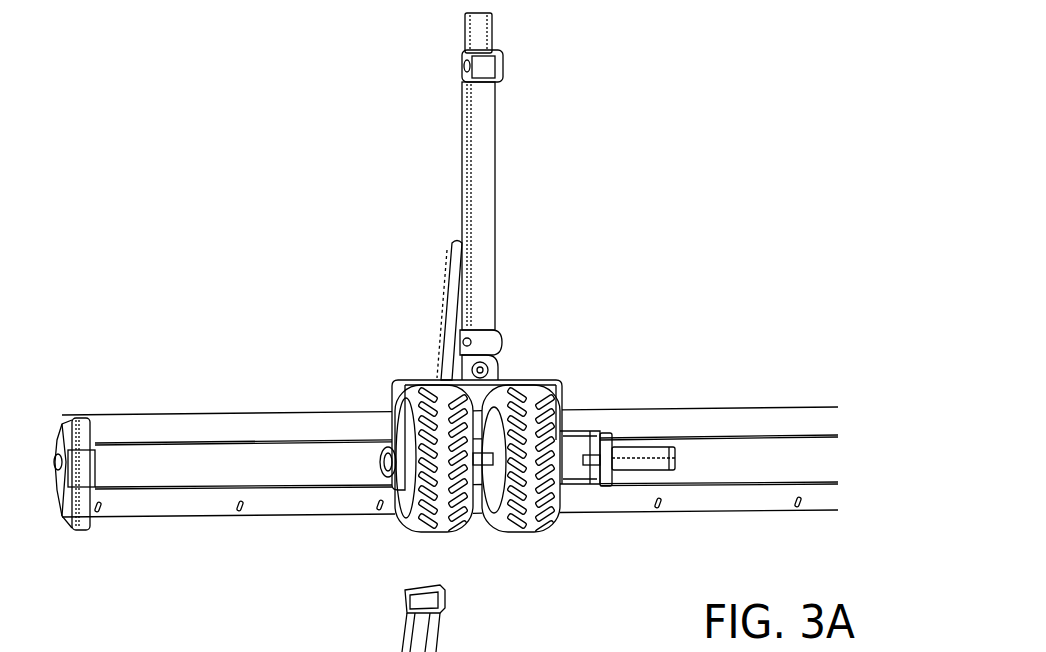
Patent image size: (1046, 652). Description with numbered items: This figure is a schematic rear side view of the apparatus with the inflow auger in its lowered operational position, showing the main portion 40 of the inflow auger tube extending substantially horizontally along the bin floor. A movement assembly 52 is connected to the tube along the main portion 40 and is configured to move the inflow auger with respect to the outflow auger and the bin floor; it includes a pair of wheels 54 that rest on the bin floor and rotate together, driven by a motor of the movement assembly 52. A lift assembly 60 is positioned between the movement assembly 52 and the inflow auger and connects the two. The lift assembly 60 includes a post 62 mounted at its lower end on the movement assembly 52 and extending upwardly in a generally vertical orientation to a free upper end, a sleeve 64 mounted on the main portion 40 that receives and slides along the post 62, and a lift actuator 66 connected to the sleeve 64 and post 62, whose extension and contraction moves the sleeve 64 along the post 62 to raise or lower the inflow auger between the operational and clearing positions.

The main portion 40 is at (613, 380).
The movement assembly 52 is at (485, 558).
The wheel 54 is at (514, 533).
The lift assembly 60 is at (522, 105).
The post 62 is at (493, 47).
The sleeve 64 is at (465, 53).
The lift actuator 66 is at (496, 176).